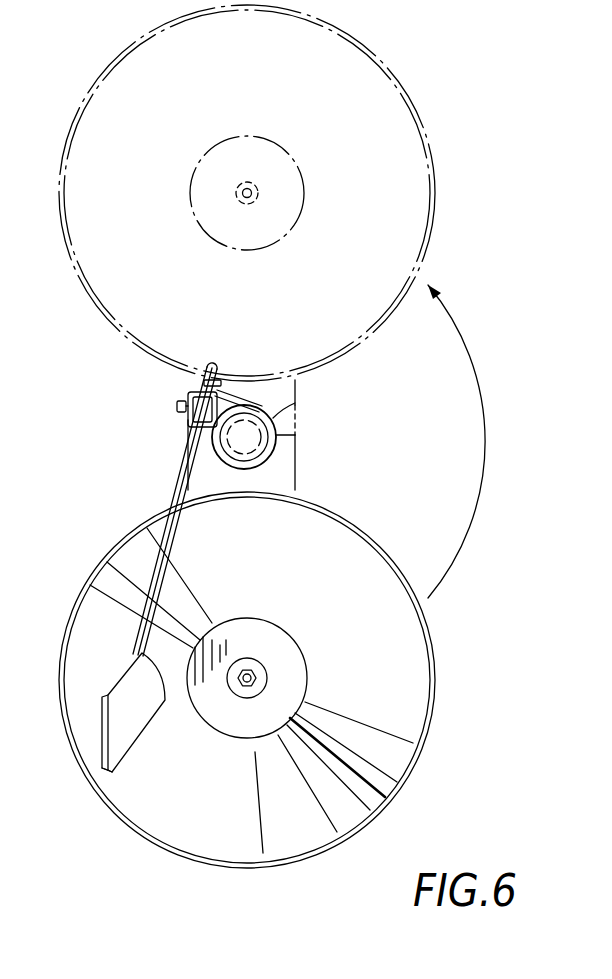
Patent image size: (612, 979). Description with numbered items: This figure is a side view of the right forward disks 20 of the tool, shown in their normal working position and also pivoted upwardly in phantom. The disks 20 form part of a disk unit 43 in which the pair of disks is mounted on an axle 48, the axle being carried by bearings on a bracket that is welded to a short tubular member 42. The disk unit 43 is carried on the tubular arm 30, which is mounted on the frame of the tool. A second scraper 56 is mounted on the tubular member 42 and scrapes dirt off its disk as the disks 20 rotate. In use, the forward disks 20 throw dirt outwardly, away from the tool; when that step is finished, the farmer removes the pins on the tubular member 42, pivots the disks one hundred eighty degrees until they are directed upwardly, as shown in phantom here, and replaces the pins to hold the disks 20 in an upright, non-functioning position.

The right forward disks 20 is at (436, 180).
The arm 30 is at (268, 457).
The short tubular member 42 is at (295, 403).
The disk unit 43 is at (449, 607).
The axle 48 is at (253, 675).
The second scraper 56 is at (181, 485).